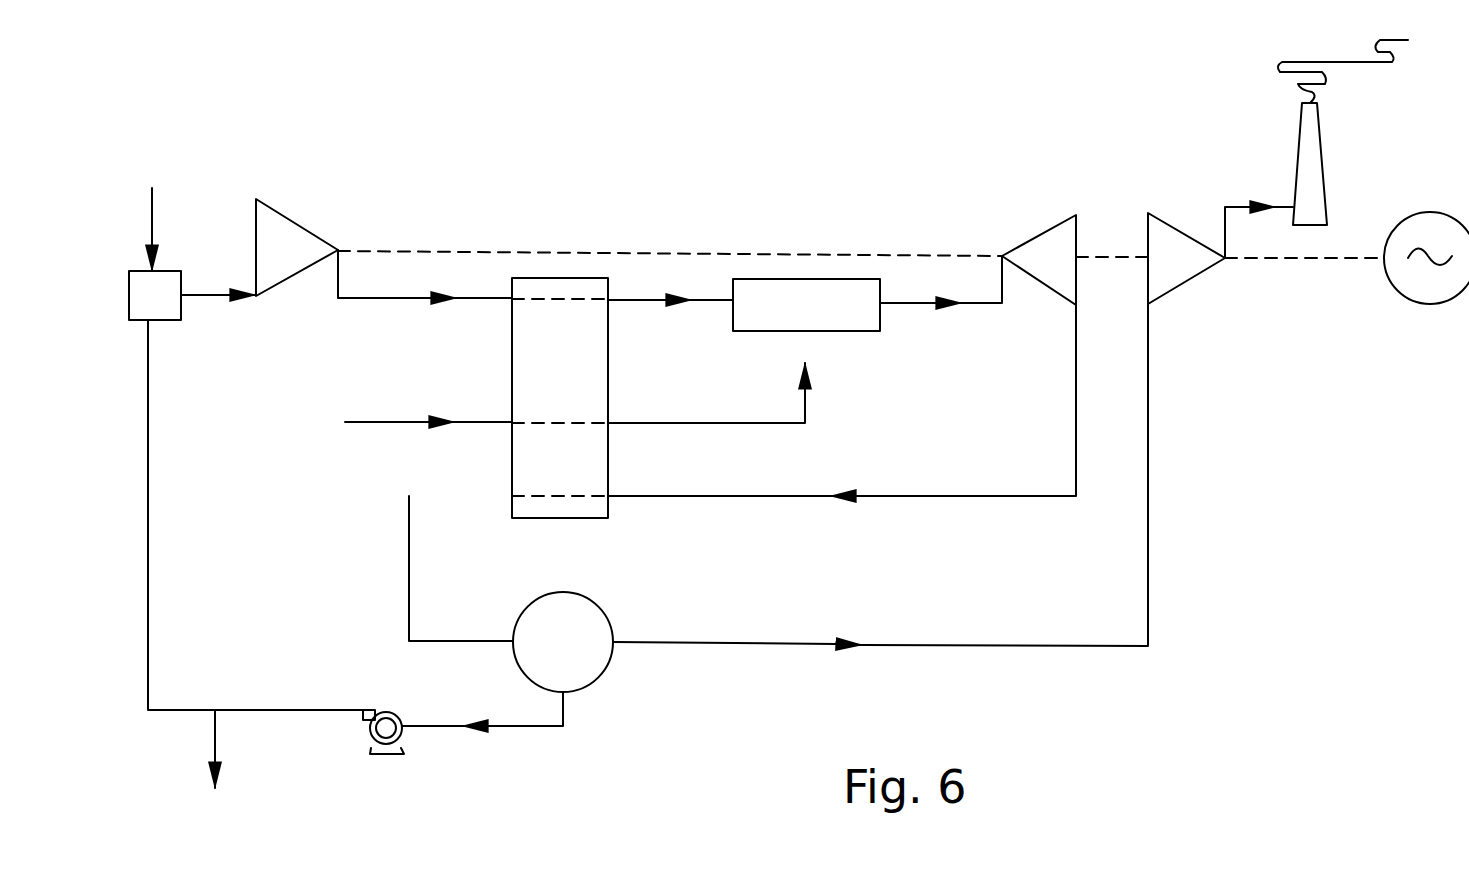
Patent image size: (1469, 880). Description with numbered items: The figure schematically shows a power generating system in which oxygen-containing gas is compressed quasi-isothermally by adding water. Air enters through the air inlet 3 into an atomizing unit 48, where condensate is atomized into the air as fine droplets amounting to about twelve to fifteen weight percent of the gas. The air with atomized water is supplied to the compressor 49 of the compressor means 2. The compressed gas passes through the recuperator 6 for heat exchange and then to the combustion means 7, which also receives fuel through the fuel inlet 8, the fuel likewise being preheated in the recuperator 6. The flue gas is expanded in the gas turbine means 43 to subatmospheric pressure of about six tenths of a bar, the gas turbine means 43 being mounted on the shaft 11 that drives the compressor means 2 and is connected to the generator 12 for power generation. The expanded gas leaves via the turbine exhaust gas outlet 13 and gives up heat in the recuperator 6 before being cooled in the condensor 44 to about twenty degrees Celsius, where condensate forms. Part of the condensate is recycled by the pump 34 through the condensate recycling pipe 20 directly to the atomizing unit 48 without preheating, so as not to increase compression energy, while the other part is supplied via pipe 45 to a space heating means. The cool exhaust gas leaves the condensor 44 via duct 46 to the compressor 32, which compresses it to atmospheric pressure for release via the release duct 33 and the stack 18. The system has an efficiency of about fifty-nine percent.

The compressor means 2 is at (342, 212).
The inlet for oxygen-containing gas 3 is at (152, 213).
The recuperator 6 is at (608, 362).
The combustion means 7 is at (784, 333).
The fuel inlet 8 is at (408, 421).
The shaft 11 is at (678, 252).
The generator 12 is at (1420, 222).
The turbine exhaust gas outlet 13 is at (1075, 422).
The stack 18 is at (1325, 128).
The condensate recycling pipe 20 is at (190, 565).
The compressor 32 is at (1168, 216).
The release duct 33 is at (1284, 206).
The pump 34 is at (380, 712).
The gas turbine means 43 is at (1068, 215).
The condensor 44 is at (648, 608).
The pipe 45 is at (215, 722).
The duct 46 is at (1000, 645).
The atomizing unit 48 is at (160, 320).
The compressor 49 is at (334, 222).